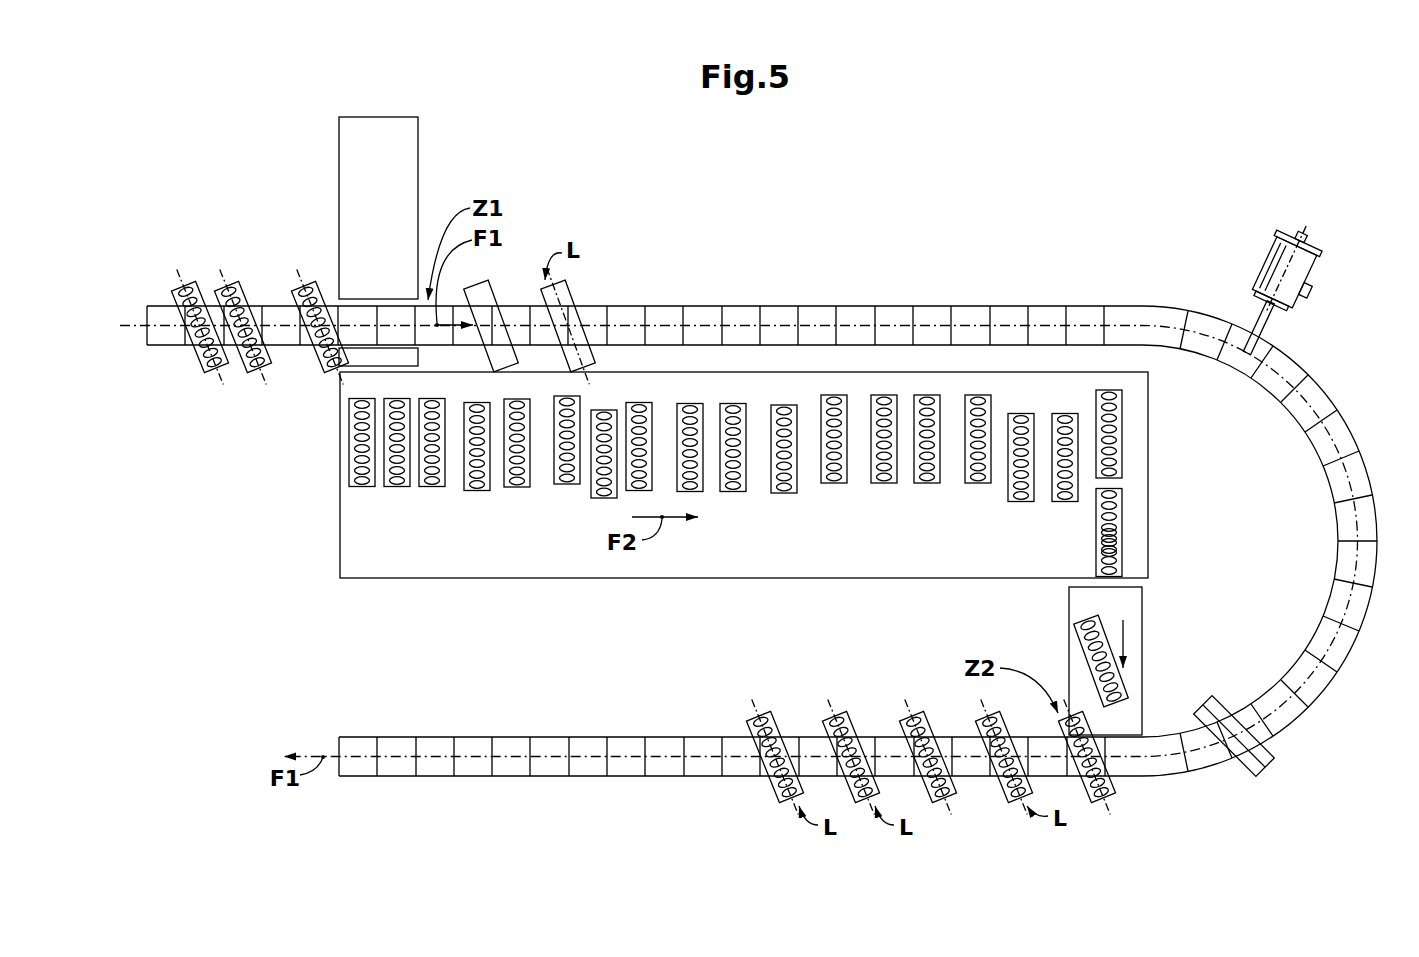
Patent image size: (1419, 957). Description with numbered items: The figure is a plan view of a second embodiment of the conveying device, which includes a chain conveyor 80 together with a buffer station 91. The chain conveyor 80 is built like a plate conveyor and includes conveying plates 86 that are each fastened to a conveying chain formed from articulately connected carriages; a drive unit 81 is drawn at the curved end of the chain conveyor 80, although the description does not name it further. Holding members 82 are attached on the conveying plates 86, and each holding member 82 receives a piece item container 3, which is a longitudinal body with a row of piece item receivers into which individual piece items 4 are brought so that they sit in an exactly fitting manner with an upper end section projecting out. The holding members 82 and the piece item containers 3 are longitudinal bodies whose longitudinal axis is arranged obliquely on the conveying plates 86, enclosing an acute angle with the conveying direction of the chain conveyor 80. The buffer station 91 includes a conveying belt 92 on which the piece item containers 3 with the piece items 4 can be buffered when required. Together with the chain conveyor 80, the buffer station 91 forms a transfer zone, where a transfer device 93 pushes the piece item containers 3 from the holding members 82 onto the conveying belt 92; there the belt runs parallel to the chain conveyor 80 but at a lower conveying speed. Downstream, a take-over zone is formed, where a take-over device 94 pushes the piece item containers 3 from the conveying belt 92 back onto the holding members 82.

The piece item container 3 is at (193, 283).
The piece item 4 is at (1107, 551).
The chain conveyor 80 is at (748, 545).
The drive motor 81 is at (1298, 280).
The holding member 82 is at (177, 290).
The conveying plate 86 is at (817, 315).
The buffer station 91 is at (694, 498).
The conveying belt 92 is at (362, 559).
The transfer device 93 is at (348, 143).
The take-over device 94 is at (1133, 668).